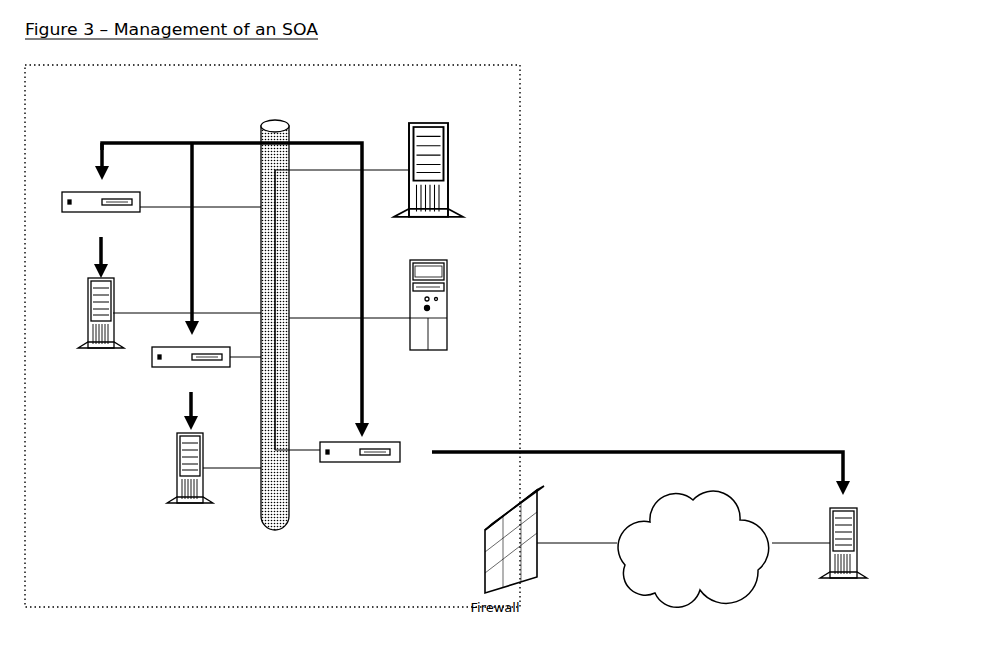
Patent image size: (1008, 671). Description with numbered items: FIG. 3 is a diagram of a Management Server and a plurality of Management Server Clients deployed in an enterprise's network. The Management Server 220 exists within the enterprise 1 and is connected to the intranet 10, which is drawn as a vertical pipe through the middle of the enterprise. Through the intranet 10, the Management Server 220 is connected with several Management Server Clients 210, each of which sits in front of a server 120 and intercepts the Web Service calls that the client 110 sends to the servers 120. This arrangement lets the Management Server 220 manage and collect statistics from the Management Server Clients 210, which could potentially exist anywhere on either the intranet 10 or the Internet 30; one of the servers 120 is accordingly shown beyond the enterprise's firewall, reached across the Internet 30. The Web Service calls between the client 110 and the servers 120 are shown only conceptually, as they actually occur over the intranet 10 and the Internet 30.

The enterprise 1 is at (272, 336).
The intranet 10 is at (297, 307).
The Internet 30 is at (693, 567).
The client 110 is at (444, 165).
The servers 120 is at (478, 432).
The Management Server Client 210 is at (231, 357).
The Management Server 220 is at (447, 331).